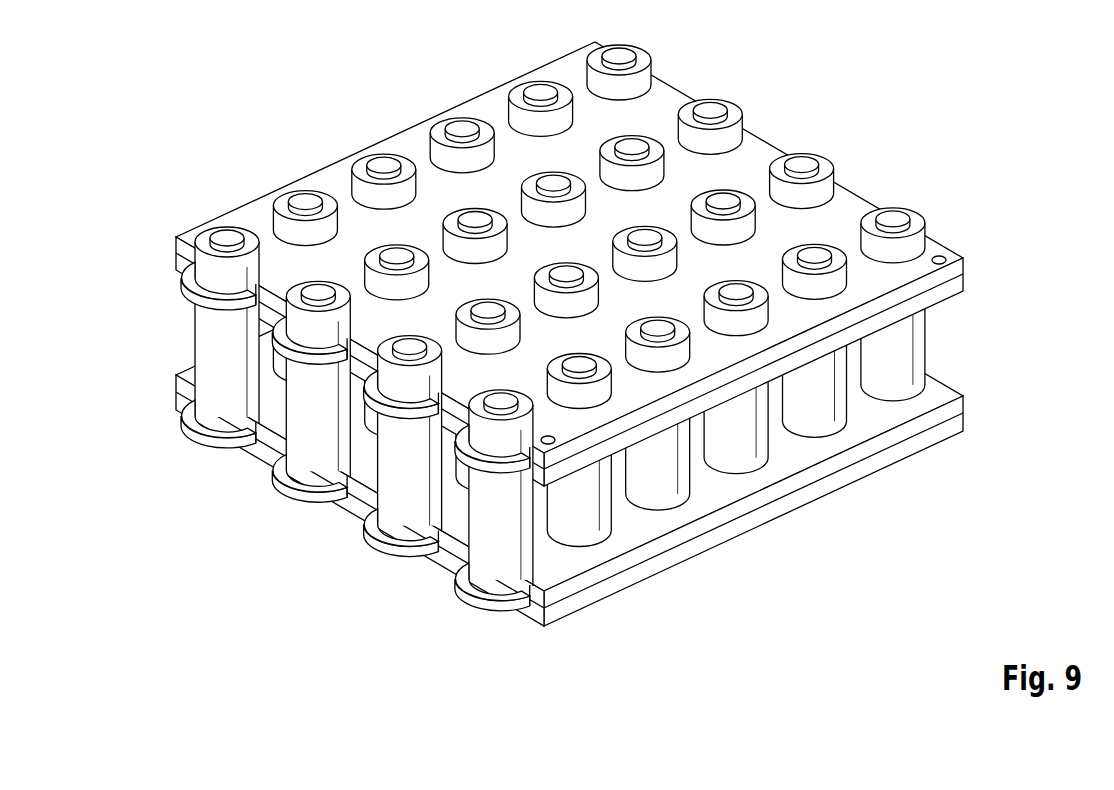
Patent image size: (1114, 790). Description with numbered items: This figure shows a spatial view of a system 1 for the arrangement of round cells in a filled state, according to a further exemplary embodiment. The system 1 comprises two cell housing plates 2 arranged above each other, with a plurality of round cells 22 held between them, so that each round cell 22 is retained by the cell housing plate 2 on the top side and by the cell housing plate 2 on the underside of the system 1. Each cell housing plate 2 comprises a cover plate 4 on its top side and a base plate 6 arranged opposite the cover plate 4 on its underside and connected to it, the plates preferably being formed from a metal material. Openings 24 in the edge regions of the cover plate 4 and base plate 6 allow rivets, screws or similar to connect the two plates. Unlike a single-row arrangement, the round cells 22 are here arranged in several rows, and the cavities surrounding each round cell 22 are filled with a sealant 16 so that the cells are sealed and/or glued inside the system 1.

The system for the arrangement of round cells 1 is at (546, 346).
The cell housing plate 2 is at (546, 334).
The cover plate 4 is at (573, 334).
The base plate 6 is at (807, 506).
The sealant 16 is at (193, 278).
The round cell 22 is at (205, 337).
The opening 24 is at (945, 254).